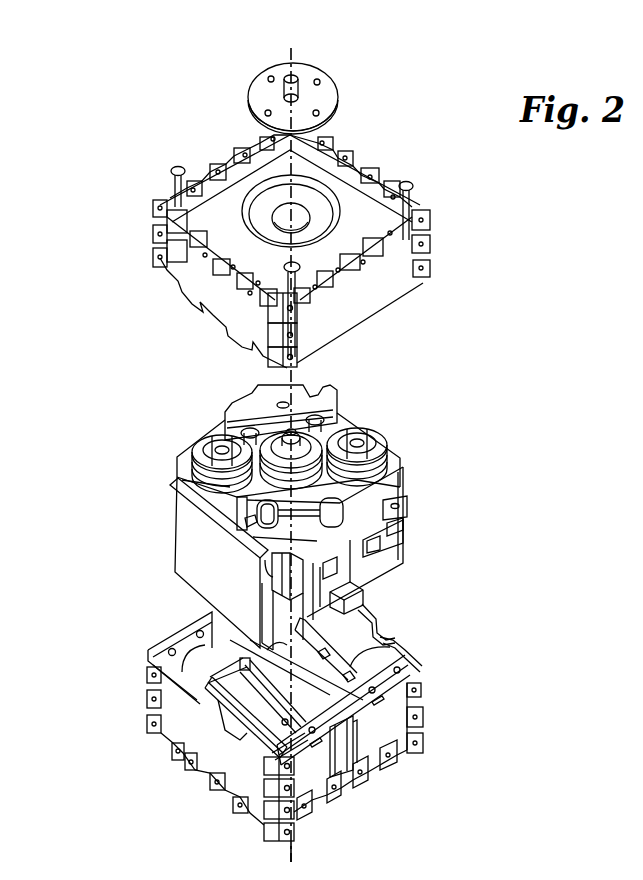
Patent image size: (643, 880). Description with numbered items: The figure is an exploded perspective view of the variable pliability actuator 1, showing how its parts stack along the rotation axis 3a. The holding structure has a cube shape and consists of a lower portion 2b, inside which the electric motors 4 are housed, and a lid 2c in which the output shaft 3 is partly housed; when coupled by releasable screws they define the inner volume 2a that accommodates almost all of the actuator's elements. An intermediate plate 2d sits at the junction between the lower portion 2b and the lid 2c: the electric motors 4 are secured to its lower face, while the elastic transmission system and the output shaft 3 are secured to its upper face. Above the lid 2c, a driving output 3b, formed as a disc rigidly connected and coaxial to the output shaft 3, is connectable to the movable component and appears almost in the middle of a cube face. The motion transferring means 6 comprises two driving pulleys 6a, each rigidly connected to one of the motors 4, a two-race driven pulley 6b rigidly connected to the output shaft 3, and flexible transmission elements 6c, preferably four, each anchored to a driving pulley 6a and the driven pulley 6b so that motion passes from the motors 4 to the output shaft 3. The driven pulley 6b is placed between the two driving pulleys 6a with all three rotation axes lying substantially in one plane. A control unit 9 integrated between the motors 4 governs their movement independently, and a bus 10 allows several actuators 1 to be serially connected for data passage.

The variable pliability actuator 1 is at (448, 768).
The inner volume 2a is at (407, 645).
The lower portion 2b is at (180, 717).
The lid 2c is at (187, 273).
The intermediate plate 2d is at (388, 478).
The output shaft 3 is at (330, 425).
The rotation axis 3a is at (288, 852).
The driving output 3b is at (248, 97).
The electric motors 4 is at (230, 580).
The motion transferring means 6 is at (180, 431).
The driving pulleys 6a is at (380, 452).
The driven pulley 6b is at (232, 408).
The flexible transmission elements 6c is at (268, 484).
The control unit 9 is at (343, 563).
The bus 10 is at (365, 603).